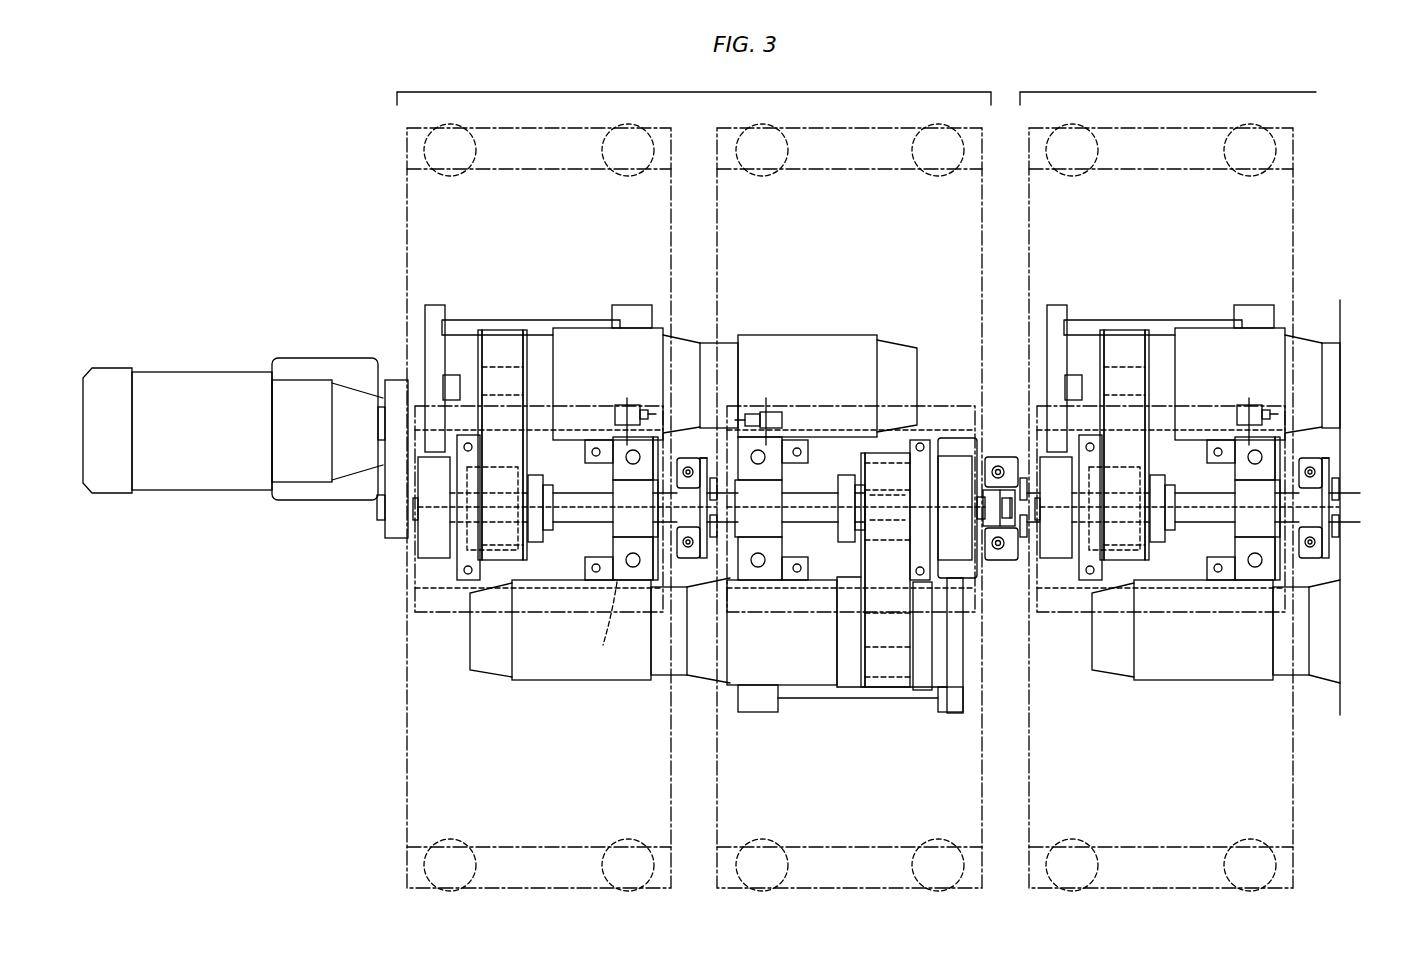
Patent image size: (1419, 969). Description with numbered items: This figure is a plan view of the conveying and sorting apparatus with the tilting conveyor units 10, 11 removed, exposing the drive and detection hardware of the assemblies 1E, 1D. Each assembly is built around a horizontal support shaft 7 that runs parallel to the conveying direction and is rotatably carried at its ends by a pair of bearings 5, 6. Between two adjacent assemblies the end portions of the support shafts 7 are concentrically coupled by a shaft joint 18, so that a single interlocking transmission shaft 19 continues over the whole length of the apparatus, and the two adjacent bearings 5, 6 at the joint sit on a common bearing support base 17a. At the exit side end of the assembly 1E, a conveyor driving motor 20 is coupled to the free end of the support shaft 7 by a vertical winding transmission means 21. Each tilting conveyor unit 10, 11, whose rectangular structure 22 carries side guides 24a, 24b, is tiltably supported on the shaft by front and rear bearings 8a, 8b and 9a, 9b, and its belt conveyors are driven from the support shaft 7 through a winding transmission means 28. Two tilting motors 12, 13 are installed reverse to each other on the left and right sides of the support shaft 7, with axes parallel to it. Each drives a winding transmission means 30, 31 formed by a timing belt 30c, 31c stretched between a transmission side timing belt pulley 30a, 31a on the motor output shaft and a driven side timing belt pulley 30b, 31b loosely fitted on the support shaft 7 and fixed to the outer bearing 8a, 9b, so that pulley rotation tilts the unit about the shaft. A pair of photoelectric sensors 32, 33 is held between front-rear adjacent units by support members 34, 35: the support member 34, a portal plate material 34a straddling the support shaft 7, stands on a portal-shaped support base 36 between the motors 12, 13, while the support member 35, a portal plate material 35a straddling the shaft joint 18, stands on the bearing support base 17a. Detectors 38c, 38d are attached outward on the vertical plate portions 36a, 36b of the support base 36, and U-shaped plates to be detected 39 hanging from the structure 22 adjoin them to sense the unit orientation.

The assembly 1E is at (694, 85).
The assembly 1D is at (1168, 85).
The bearing 5 is at (953, 470).
The bearing 6 is at (437, 545).
The support shaft 7 is at (587, 515).
The bearing 8a is at (920, 632).
The bearing 8b is at (763, 506).
The bearing 9a is at (620, 505).
The bearing 9b is at (470, 535).
The tilting conveyor unit 10 is at (922, 790).
The tilting conveyor unit 11 is at (530, 745).
The tilting motor 12 is at (536, 672).
The tilting motor 13 is at (814, 372).
The bearing support base 17a is at (1001, 447).
The shaft joint 18 is at (993, 505).
The interlocking transmission shaft 19 is at (818, 495).
The conveyor driving motor 20 is at (182, 398).
The vertical winding transmission means 21 is at (384, 428).
The structure 22 is at (405, 717).
The side guide 24a is at (532, 858).
The side guide 24b is at (540, 172).
The winding transmission means 28 is at (537, 520).
The winding transmission means 30 is at (889, 688).
The transmission side timing belt pulley 30a is at (865, 660).
The driven side timing belt pulley 30b is at (918, 478).
The timing belt 30c is at (922, 650).
The winding transmission means 31 is at (498, 333).
The transmission side timing belt pulley 31a is at (480, 365).
The driven side timing belt pulley 31b is at (415, 505).
The timing belt 31c is at (507, 388).
The photoelectric sensor 32 is at (713, 540).
The photoelectric sensor 33 is at (704, 470).
The support member 34 is at (682, 545).
The portal plate material 34a is at (684, 458).
The support member 35 is at (1000, 527).
The portal plate material 35a is at (1010, 550).
The support base 36 is at (655, 572).
The vertical plate portion 36a is at (768, 412).
The vertical plate portion 36b is at (628, 405).
The detector 38c is at (1355, 640).
The detector 38d is at (612, 414).
The plate to be detected 39 is at (608, 466).